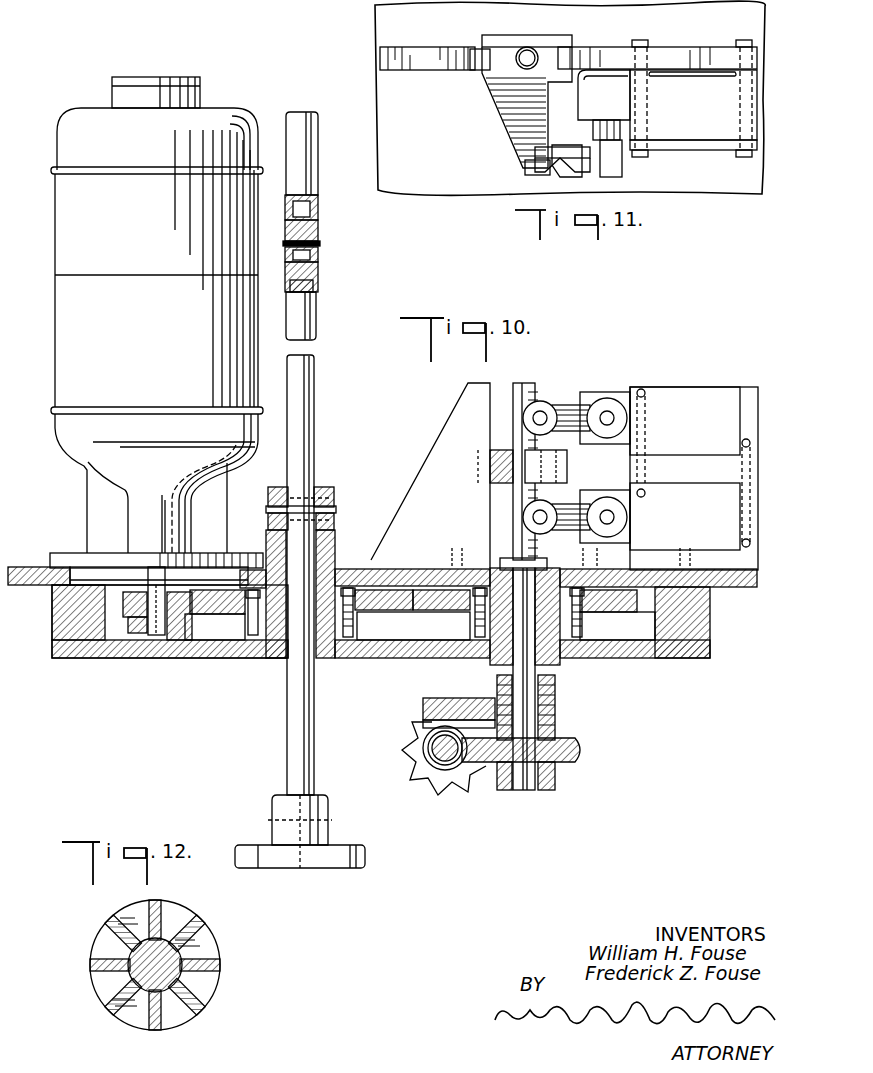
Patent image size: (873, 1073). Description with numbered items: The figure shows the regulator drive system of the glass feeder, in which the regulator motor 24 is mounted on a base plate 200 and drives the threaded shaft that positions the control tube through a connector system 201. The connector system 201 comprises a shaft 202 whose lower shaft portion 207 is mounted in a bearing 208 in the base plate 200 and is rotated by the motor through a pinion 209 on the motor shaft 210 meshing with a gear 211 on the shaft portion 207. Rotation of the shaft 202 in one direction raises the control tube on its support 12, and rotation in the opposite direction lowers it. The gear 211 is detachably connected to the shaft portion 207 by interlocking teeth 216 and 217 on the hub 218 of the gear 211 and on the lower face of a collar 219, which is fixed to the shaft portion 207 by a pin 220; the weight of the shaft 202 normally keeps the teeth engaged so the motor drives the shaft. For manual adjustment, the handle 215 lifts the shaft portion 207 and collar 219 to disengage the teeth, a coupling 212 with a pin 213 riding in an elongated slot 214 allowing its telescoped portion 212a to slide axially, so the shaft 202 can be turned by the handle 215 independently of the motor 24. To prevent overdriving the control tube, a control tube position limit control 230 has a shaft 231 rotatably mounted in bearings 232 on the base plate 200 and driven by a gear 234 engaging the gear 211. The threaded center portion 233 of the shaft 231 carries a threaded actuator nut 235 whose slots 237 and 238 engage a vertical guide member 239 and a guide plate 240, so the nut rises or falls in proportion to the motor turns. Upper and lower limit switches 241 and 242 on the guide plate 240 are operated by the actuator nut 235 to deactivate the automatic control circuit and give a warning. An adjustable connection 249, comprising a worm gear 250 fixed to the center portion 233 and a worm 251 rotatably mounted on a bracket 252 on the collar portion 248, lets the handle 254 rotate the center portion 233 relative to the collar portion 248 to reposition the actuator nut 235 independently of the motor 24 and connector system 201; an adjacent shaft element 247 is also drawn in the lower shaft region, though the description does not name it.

In FIG. 10, the regulator motor 24 is at (68, 327).
In FIG. 10, the base plate 200 is at (110, 655).
In FIG. 10, the connector system 201 is at (326, 146).
In FIG. 10, the shaft 202 is at (322, 330).
In FIG. 10, the lower shaft portion 207 is at (316, 412).
In FIG. 10, the bearing 208 is at (338, 582).
In FIG. 10, the pinion 209 is at (178, 640).
In FIG. 10, the motor shaft 210 is at (150, 640).
In FIG. 10, the gear 211 is at (388, 610).
In FIG. 10, the coupling 212 is at (320, 246).
In FIG. 10, the telescoped portion of coupling 212a is at (319, 214).
In FIG. 10, the pin 213 is at (321, 254).
In FIG. 10, the elongated slot 214 is at (319, 258).
In FIG. 10, the handle 215 is at (350, 845).
In FIG. 12, the interlocking teeth 216 is at (178, 910).
In FIG. 12, the interlocking teeth 217 is at (206, 930).
In FIG. 10, the hub 218 is at (268, 549).
In FIG. 10, the collar 219 is at (324, 532).
In FIG. 10, the pin 220 is at (320, 489).
In FIG. 10, the control tube support 12 is at (259, 522).
In FIG. 10, the control tube position limit control 230 is at (700, 366).
In FIG. 10, the shaft 231 is at (566, 700).
In FIG. 10, the bearings 232 is at (490, 666).
In FIG. 10, the center portion 233 is at (536, 384).
In FIG. 10, the gear 234 is at (612, 605).
In FIG. 10, the threaded actuator nut 235 is at (568, 466).
In FIG. 11, the threaded actuator nut 235 is at (548, 46).
In FIG. 11, the slot 237 is at (475, 50).
In FIG. 11, the slot 238 is at (580, 50).
In FIG. 10, the vertical guide member 239 is at (432, 472).
In FIG. 11, the vertical guide member 239 is at (445, 68).
In FIG. 10, the guide plate 240 is at (618, 490).
In FIG. 11, the guide plate 240 is at (612, 56).
In FIG. 10, the upper limit switch 241 is at (720, 400).
In FIG. 11, the upper limit switch 241 is at (708, 113).
In FIG. 10, the lower limit switch 242 is at (698, 495).
In FIG. 10, the threaded sleeve 247 is at (556, 712).
In FIG. 10, the collar portion 248 is at (565, 668).
In FIG. 10, the adjustable connection 249 is at (438, 792).
In FIG. 10, the worm gear 250 is at (576, 762).
In FIG. 10, the worm 251 is at (446, 766).
In FIG. 10, the bracket 252 is at (432, 700).
In FIG. 10, the handle 254 is at (420, 723).